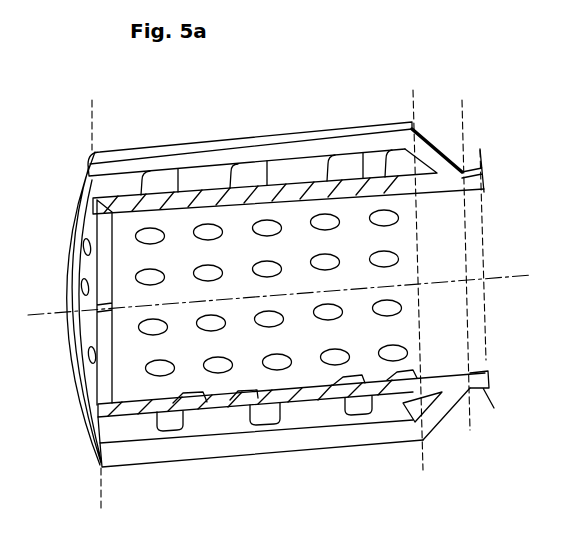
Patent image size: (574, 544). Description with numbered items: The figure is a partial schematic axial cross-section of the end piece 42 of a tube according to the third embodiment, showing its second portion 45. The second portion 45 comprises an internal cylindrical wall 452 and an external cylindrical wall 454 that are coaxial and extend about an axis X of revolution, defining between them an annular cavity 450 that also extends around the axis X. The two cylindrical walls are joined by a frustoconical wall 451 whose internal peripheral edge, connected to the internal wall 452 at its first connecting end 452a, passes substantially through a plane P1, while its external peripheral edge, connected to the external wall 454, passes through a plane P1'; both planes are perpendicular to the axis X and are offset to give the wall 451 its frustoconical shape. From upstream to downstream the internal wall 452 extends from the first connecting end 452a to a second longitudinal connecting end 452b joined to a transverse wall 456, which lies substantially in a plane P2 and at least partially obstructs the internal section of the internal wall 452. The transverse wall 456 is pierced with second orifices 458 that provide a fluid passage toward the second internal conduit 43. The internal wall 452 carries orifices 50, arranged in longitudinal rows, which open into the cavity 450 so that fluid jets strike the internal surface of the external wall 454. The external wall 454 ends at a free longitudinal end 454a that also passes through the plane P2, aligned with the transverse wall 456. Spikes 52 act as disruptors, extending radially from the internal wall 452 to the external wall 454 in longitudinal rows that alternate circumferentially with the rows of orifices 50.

The end piece 42 is at (222, 112).
The second internal conduit 43 is at (443, 340).
The second portion 45 is at (480, 374).
The orifices 50 is at (278, 412).
The spikes 52 is at (173, 424).
The annular cavity 450 is at (113, 432).
The frustoconical wall 451 is at (440, 408).
The internal cylindrical wall 452 is at (353, 185).
The first connecting end 452a is at (398, 407).
The second longitudinal connecting end 452b is at (128, 414).
The external cylindrical wall 454 is at (205, 157).
The free longitudinal end 454a is at (107, 455).
The transverse wall 456 is at (75, 320).
The second orifices 458 is at (77, 268).
The plane P1 is at (494, 264).
The plane P1' is at (449, 271).
The plane P2 is at (92, 122).
The axis of revolution X is at (507, 275).